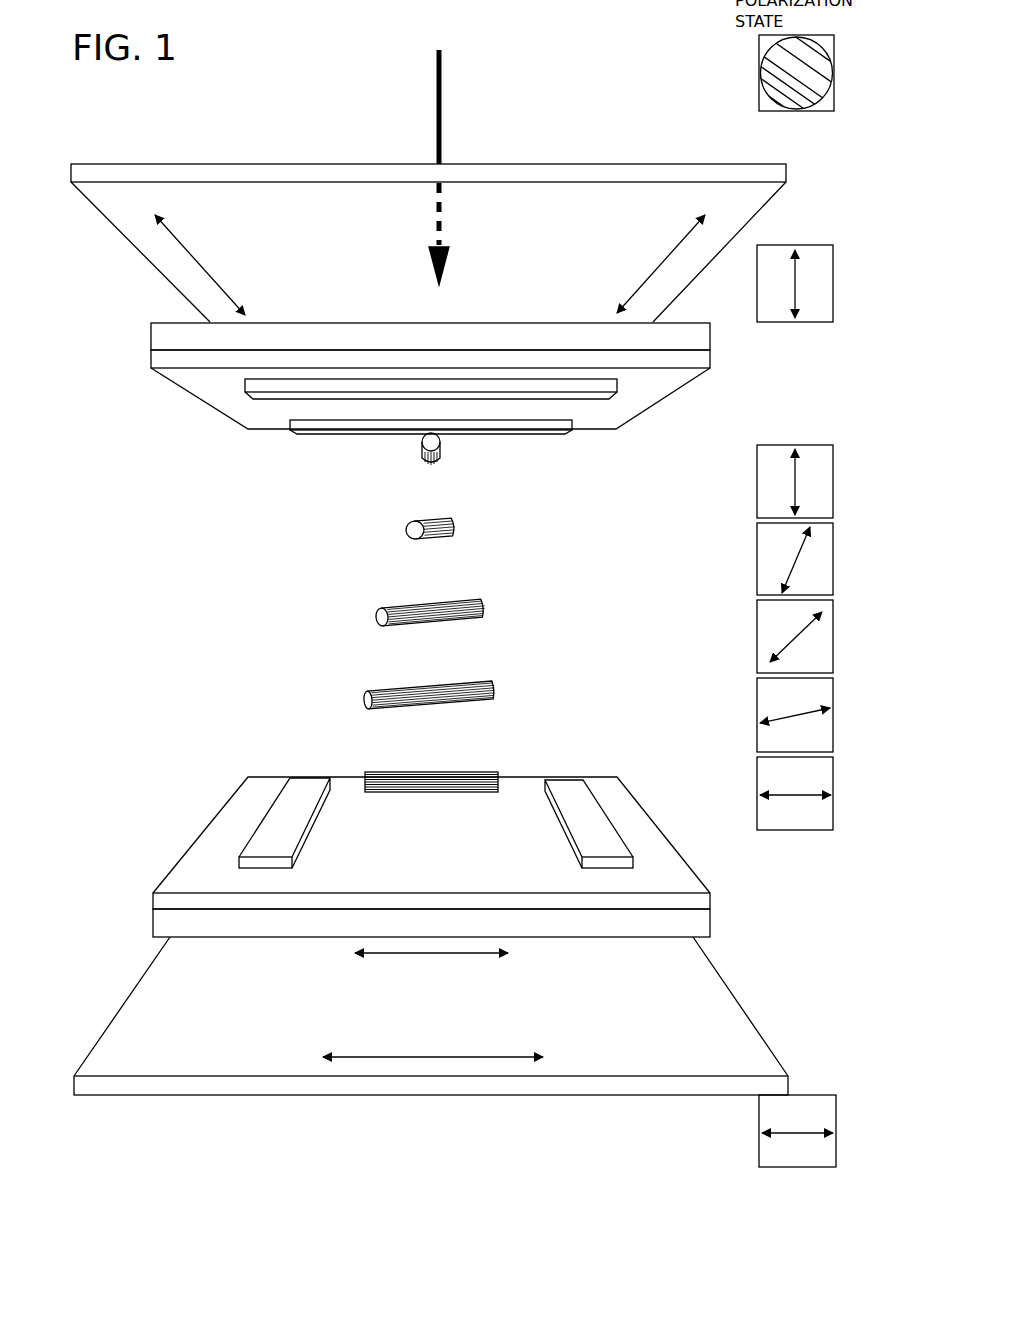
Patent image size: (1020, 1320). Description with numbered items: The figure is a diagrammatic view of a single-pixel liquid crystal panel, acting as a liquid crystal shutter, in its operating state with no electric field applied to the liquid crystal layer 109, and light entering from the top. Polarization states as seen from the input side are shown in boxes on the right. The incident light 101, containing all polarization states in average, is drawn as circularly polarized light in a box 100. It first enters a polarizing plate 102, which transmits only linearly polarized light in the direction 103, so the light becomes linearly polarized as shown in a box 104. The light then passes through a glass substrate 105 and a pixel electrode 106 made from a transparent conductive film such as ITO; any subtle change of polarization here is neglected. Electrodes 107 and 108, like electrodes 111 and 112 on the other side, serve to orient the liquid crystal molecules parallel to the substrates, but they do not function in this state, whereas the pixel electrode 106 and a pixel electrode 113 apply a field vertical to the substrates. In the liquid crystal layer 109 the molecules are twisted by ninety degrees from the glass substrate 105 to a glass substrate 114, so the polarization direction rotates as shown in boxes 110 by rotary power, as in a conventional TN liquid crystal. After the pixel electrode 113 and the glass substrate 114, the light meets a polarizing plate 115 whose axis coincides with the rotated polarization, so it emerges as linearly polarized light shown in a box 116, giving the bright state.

The box 100 is at (770, 105).
The incident light 101 is at (441, 93).
The polarizing plate 102 is at (105, 168).
The direction 103 is at (212, 275).
The box 104 is at (757, 322).
The glass substrate 105 is at (151, 325).
The pixel electrode 106 is at (151, 352).
The electrode 107 is at (607, 395).
The electrode 108 is at (570, 434).
The liquid crystal layer 109 is at (338, 442).
The boxes 110 is at (737, 450).
The electrode 111 is at (265, 833).
The electrode 112 is at (573, 800).
The pixel electrode 113 is at (712, 900).
The glass substrate 114 is at (712, 922).
The polarizing plate 115 is at (742, 1025).
The box 116 is at (798, 1107).